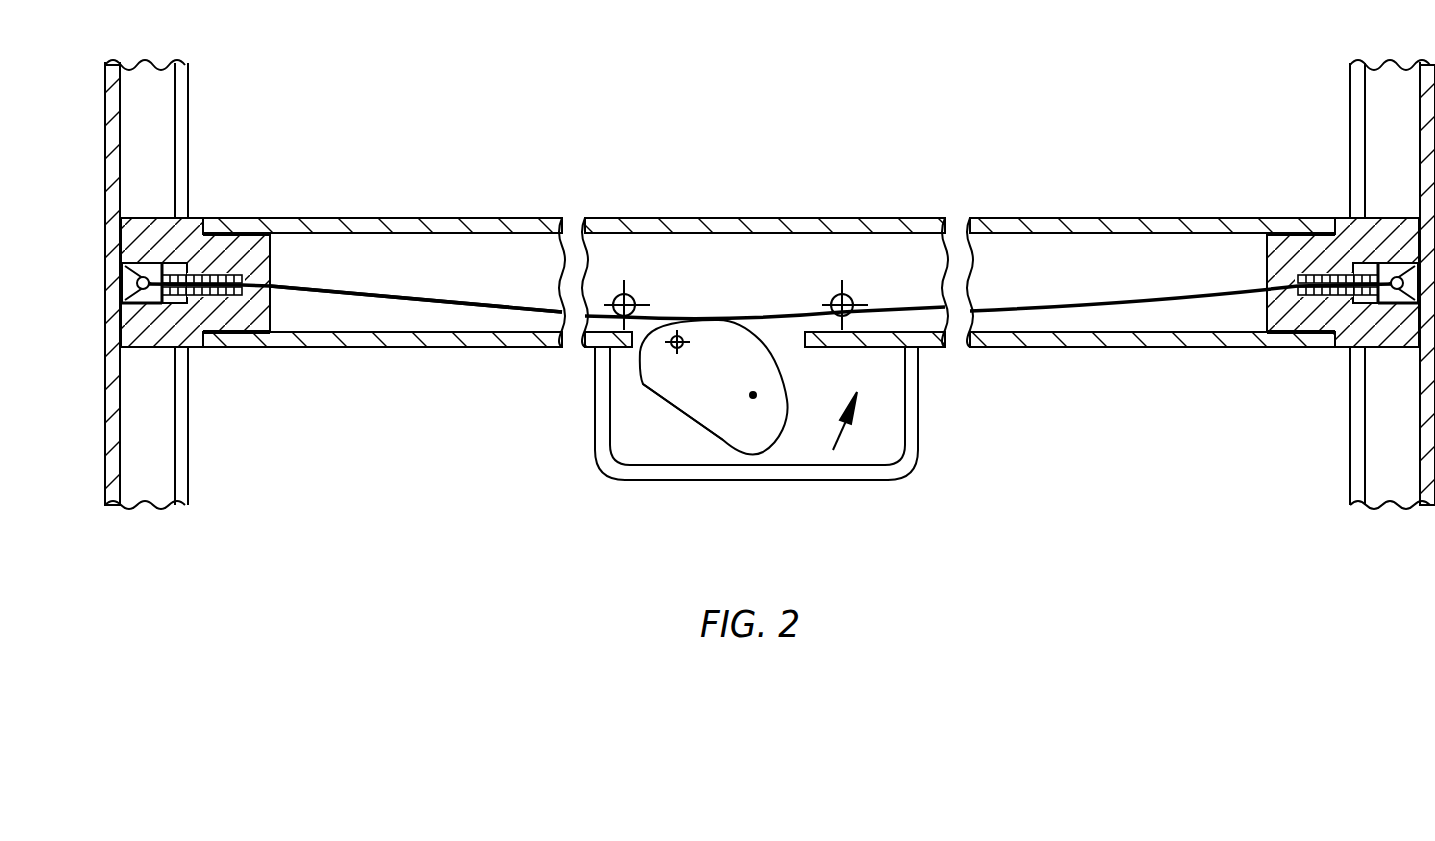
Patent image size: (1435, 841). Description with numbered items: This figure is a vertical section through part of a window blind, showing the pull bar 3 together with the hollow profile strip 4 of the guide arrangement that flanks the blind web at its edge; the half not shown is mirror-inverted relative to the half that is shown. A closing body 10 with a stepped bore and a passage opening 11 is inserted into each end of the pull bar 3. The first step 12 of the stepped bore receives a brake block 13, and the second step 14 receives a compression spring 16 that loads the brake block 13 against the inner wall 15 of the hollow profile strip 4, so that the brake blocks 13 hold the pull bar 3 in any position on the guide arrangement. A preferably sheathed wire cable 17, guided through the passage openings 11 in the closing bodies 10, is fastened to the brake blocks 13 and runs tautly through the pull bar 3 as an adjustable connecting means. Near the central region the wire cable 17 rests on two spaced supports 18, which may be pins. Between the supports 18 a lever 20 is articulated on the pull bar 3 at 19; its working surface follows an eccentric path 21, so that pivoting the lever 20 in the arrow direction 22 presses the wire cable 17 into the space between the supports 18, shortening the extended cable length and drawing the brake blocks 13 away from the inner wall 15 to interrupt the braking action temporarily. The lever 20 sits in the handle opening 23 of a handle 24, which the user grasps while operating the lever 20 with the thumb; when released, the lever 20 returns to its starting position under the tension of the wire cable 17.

The pull bar 3 is at (1033, 225).
The hollow profile strip 4 is at (188, 138).
The closing body 10 is at (265, 252).
The passage opening 11 is at (270, 287).
The first step 12 is at (178, 216).
The brake block 13 is at (215, 230).
The second step 14 is at (223, 290).
The inner wall 15 is at (120, 127).
The compression spring 16 is at (183, 303).
The wire cable 17 is at (513, 305).
The support 18 is at (627, 294).
The articulation point 19 is at (671, 346).
The lever 20 is at (707, 420).
The eccentric path 21 is at (749, 332).
The arrow direction 22 is at (833, 450).
The handle opening 23 is at (880, 393).
The handle 24 is at (867, 475).